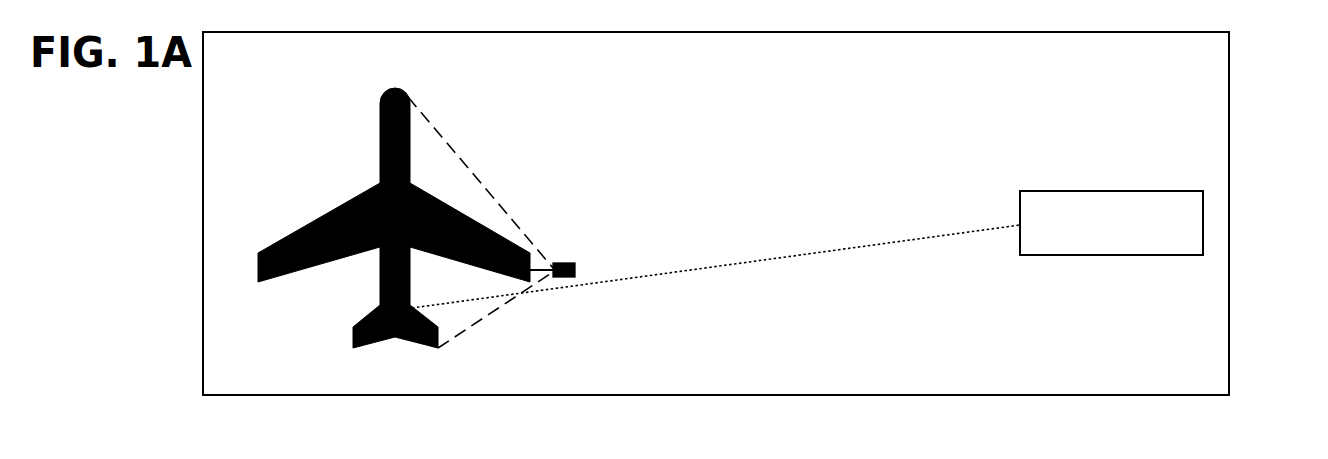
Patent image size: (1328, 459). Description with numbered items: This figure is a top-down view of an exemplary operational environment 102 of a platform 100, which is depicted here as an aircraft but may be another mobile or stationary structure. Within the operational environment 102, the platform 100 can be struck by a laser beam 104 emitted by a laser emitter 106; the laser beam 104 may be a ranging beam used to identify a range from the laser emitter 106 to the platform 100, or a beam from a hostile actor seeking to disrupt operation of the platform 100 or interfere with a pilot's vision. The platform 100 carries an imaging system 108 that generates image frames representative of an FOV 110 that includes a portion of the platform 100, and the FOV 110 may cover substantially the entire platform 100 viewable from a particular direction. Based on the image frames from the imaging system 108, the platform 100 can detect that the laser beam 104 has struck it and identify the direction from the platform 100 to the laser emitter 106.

The platform 100 is at (380, 130).
The operational environment 102 is at (203, 178).
The laser beam 104 is at (689, 270).
The laser emitter 106 is at (1192, 191).
The imaging system 108 is at (568, 263).
The FOV 110 is at (458, 150).